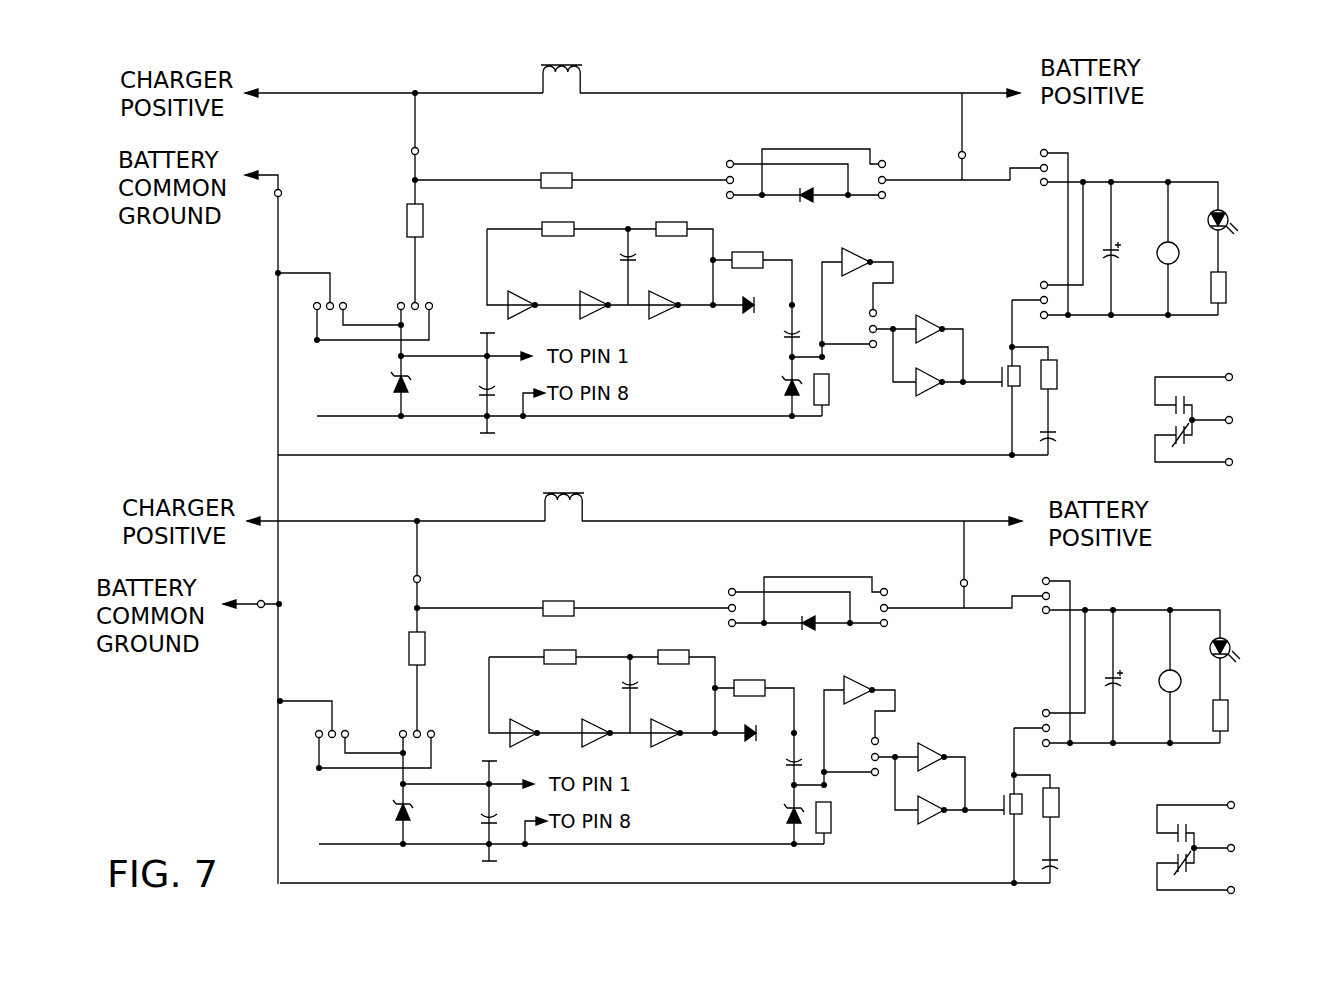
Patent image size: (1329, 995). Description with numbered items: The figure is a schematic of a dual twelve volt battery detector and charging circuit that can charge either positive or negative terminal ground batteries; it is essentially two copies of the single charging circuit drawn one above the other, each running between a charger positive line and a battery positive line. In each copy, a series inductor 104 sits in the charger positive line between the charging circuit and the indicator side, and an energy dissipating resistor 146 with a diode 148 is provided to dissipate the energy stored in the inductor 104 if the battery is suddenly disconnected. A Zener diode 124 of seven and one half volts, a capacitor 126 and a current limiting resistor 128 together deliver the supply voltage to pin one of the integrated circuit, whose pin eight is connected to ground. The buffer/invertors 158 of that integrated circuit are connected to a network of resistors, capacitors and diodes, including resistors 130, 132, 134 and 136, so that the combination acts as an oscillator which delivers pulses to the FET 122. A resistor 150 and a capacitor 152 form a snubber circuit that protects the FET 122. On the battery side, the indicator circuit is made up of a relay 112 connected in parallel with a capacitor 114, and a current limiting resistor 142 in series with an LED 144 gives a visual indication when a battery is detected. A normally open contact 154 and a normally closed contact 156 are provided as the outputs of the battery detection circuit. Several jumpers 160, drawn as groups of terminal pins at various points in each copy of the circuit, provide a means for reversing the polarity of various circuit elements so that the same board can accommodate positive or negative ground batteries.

The inductor 104 is at (560, 68).
The relay 112 is at (1182, 250).
The capacitor 114 is at (1122, 258).
The FET 122 is at (1003, 390).
The Zener diode 124 is at (395, 405).
The capacitor 126 is at (480, 400).
The current limiting resistor 128 is at (406, 218).
The resistor 130 is at (556, 221).
The resistor 132 is at (672, 220).
The resistor 134 is at (745, 251).
The resistor 136 is at (830, 393).
The current limiting resistor 142 is at (1232, 284).
The LED 144 is at (1228, 204).
The energy dissipating resistor 146 is at (560, 172).
The diode 148 is at (808, 203).
The resistor 150 is at (1057, 361).
The capacitor 152 is at (1053, 442).
The normally open contact 154 is at (1195, 401).
The normally closed contact 156 is at (1195, 438).
The buffer/invertors 158 is at (520, 315).
The jumpers 160 is at (405, 298).